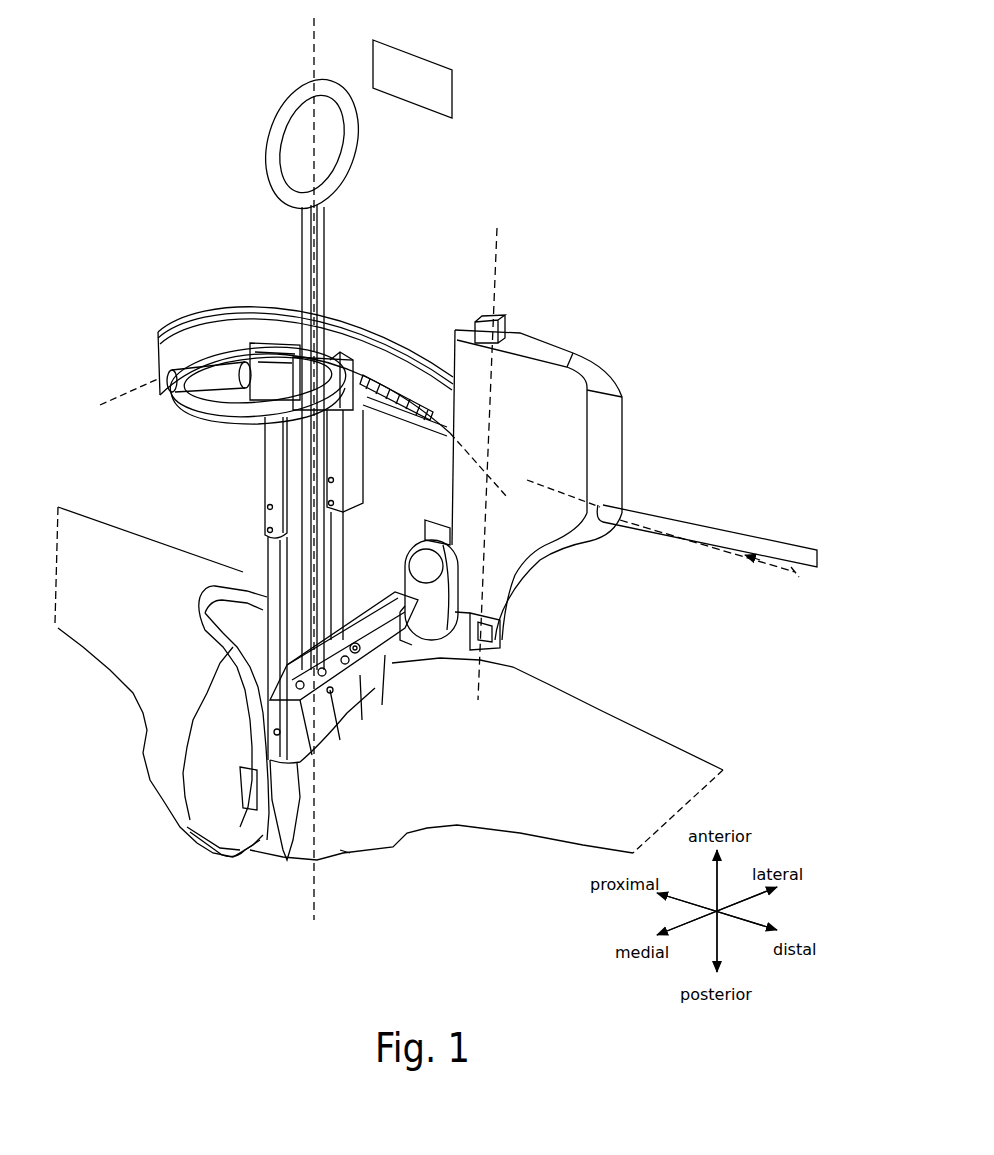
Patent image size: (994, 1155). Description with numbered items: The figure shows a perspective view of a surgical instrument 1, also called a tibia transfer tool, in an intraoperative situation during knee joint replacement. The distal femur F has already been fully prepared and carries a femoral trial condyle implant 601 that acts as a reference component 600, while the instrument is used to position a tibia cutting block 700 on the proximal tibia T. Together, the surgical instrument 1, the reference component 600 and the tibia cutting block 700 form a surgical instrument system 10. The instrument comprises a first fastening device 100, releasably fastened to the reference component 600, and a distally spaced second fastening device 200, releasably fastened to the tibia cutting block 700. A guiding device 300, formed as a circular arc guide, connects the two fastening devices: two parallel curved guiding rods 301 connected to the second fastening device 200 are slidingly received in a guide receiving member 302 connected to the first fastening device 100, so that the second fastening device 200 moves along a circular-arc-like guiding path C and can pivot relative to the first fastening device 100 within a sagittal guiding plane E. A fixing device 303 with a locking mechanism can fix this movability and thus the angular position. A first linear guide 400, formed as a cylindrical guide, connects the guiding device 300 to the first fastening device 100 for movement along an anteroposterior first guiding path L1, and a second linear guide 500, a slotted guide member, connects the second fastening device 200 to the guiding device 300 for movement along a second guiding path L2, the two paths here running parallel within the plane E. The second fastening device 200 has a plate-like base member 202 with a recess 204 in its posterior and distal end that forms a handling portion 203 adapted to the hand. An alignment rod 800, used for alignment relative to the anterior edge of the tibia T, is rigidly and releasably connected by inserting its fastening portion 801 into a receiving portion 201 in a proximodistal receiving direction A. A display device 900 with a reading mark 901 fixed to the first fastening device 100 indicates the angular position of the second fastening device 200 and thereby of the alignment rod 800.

The surgical instrument 1 is at (545, 190).
The surgical instrument system 10 is at (615, 130).
The first fastening device 100 is at (285, 711).
The second fastening device 200 is at (578, 460).
The receiving portion 201 is at (608, 483).
The base member 202 is at (573, 407).
The handling portion 203 is at (581, 614).
The recess 204 is at (523, 580).
The guiding device 300 is at (315, 369).
The curved guiding rod 301 is at (345, 330).
The guide receiving member 302 is at (293, 332).
The fixing device 303 is at (388, 420).
The first linear guide 400 is at (250, 447).
The second linear guide 500 is at (463, 320).
The reference component 600 is at (177, 730).
The femoral trial condyle implant 601 is at (233, 647).
The tibia cutting block 700 is at (285, 862).
The alignment rod 800 is at (707, 533).
The fastening portion 801 is at (620, 495).
The display device 900 is at (305, 323).
The reading mark 901 is at (273, 330).
The receiving direction A is at (772, 570).
The guiding path C is at (120, 392).
The sagittal guiding plane E is at (414, 88).
The distal femur F is at (123, 662).
The proximal tibia T is at (473, 807).
The first guiding path L1 is at (312, 907).
The second guiding path L2 is at (500, 662).